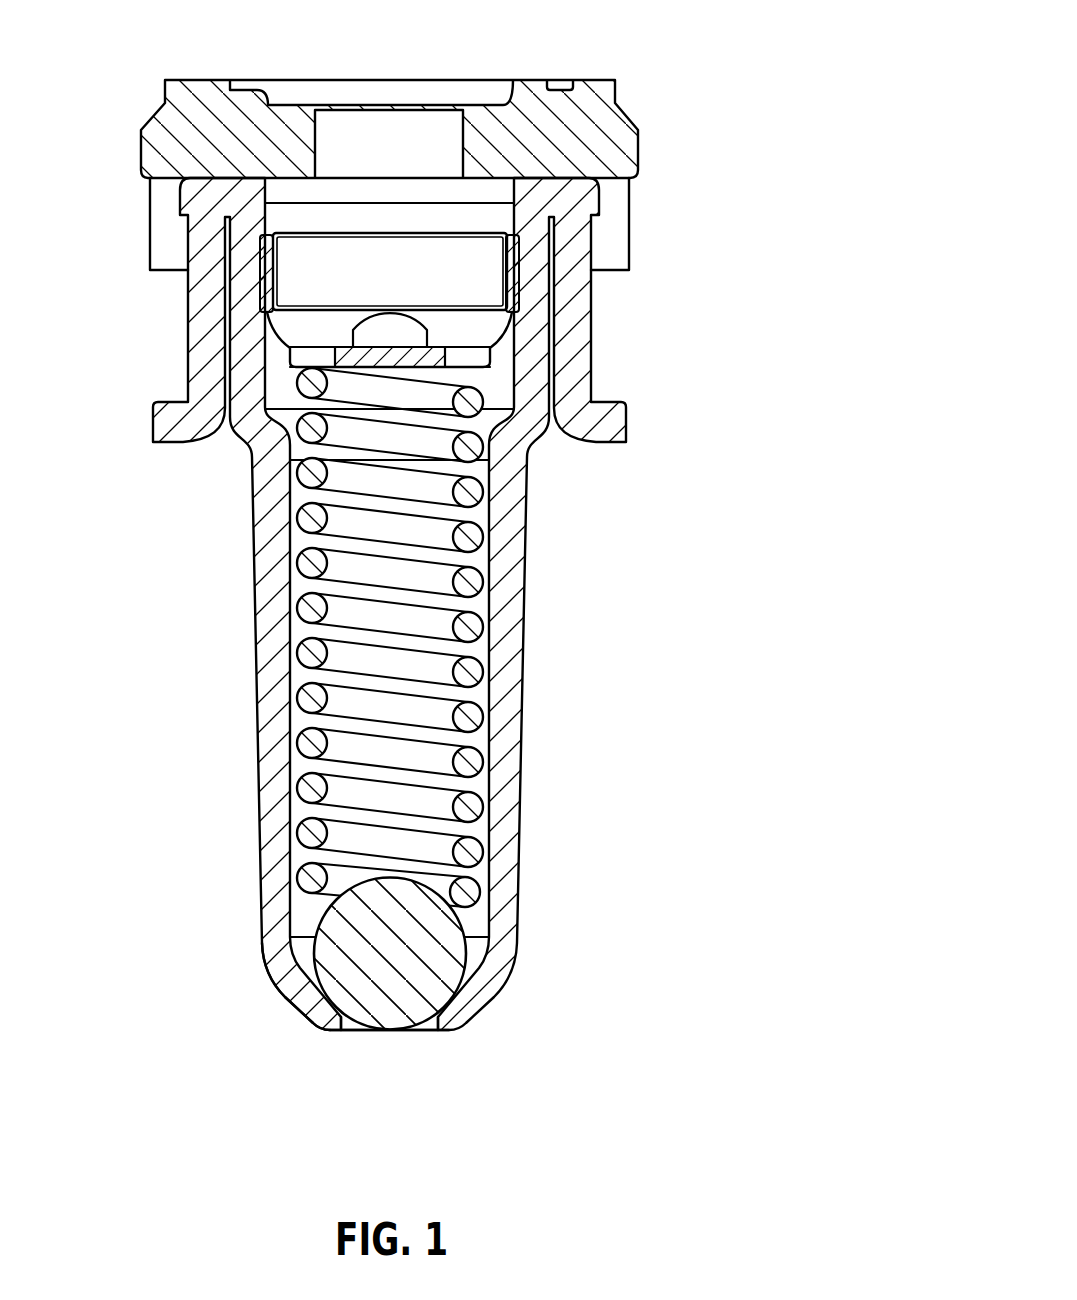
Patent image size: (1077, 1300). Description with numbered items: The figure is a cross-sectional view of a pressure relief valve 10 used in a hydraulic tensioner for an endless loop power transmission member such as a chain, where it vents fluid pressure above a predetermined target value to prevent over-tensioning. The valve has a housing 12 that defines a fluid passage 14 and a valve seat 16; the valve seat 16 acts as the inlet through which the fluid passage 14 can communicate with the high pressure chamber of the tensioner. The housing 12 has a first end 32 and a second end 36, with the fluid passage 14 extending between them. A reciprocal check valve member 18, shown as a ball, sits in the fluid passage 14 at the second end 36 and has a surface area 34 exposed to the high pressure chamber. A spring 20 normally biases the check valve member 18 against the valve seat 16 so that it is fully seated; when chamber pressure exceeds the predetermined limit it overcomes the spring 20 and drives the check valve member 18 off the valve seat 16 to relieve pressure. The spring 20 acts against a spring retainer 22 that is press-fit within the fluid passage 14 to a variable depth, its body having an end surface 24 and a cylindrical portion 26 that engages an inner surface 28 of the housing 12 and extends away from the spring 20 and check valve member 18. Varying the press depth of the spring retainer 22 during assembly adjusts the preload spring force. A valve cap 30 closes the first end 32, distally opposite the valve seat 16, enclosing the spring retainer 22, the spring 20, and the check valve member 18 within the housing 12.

The pressure relief valve 10 is at (670, 94).
The housing 12 is at (505, 790).
The fluid passage 14 is at (473, 697).
The valve seat 16 is at (446, 1031).
The reciprocal check valve member 18 is at (413, 957).
The spring 20 is at (437, 580).
The spring retainer 22 is at (350, 260).
The end surface 24 is at (345, 357).
The cylindrical portion 26 is at (293, 290).
The inner surface 28 is at (520, 332).
The valve cap 30 is at (215, 135).
The first end 32 is at (560, 182).
The surface area 34 is at (380, 1031).
The second end 36 is at (307, 993).